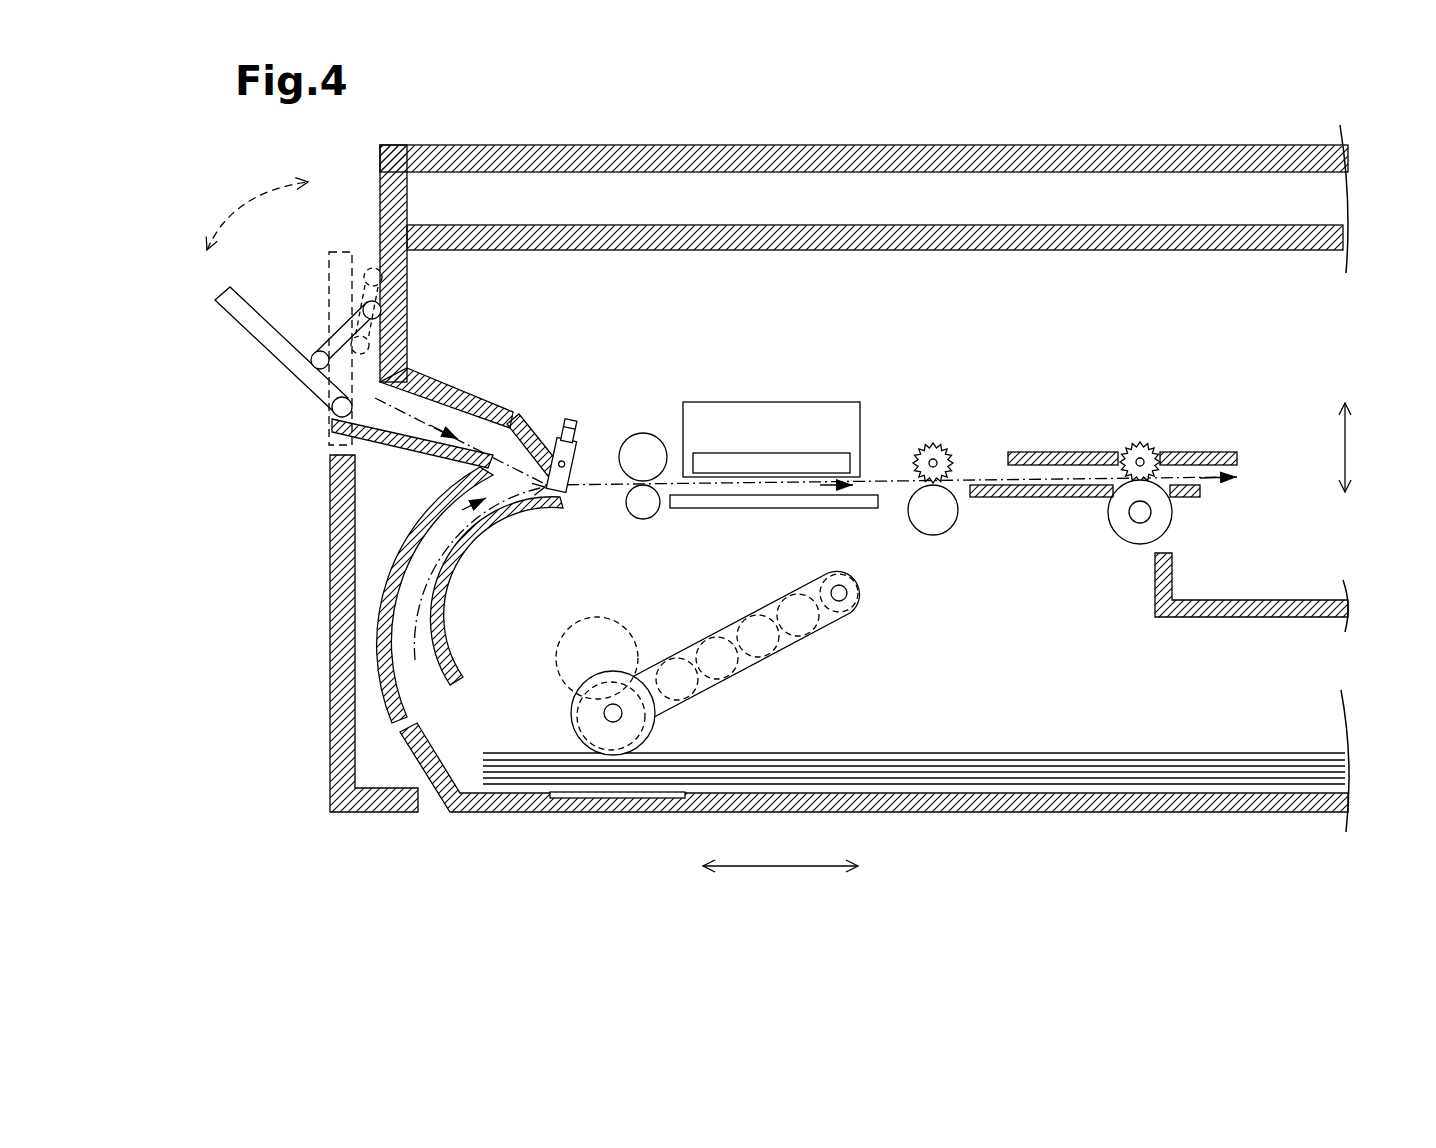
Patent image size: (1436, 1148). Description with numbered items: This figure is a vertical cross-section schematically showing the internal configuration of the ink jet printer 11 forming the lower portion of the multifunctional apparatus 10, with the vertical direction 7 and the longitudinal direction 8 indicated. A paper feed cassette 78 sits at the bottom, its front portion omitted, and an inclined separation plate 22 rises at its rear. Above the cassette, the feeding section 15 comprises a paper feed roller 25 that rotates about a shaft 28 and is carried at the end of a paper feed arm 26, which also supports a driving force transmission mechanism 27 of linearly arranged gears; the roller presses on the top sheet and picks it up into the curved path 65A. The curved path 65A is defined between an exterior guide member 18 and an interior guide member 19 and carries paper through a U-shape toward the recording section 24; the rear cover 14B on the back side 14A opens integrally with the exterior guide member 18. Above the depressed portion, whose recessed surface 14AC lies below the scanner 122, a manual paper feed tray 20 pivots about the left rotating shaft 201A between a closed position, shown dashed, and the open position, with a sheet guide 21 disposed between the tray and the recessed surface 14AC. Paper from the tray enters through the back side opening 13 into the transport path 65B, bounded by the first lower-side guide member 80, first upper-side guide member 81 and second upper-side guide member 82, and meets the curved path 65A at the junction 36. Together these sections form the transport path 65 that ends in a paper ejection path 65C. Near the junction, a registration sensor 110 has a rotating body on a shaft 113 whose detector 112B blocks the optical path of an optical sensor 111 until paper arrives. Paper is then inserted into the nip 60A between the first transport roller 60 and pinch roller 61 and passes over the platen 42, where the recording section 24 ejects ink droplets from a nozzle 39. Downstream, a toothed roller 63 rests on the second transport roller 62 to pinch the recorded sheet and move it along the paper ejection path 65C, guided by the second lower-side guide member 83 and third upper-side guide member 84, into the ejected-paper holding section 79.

The multifunctional apparatus 10 is at (262, 152).
The recessed surface 14AC is at (832, 344).
The scanner 122 is at (1163, 145).
The ink jet printer 11 is at (490, 302).
The first upper-side guide member 81 is at (437, 377).
The second upper-side guide member 82 is at (528, 470).
The back side 14A is at (341, 633).
The rear cover 14B is at (330, 705).
The first lower-side guide member 80 is at (390, 448).
The manual paper feed tray 20 is at (230, 318).
The sheet guide 21 is at (365, 270).
The left rotating shaft 201A is at (328, 408).
The back side opening 13 is at (372, 398).
The exterior guide member 18 is at (392, 562).
The interior guide member 19 is at (455, 583).
The junction 36 is at (548, 512).
The transport path 65 is at (806, 483).
The curved path 65A is at (417, 648).
The transport path 65B is at (415, 420).
The paper ejection path 65C is at (983, 478).
The registration sensor 110 is at (572, 446).
The optical sensor 111 is at (577, 415).
The detector 112B is at (591, 391).
The shaft 113 is at (565, 445).
The first transport roller 60 is at (623, 477).
The nip 60A is at (630, 487).
The pinch roller 61 is at (660, 512).
The recording section 24 is at (750, 408).
The nozzle 39 is at (768, 452).
The platen 42 is at (808, 508).
The toothed roller 63 is at (933, 443).
The second transport roller 62 is at (920, 528).
The third upper-side guide member 84 is at (1018, 452).
The second lower-side guide member 83 is at (988, 497).
The ejected-paper holding section 79 is at (1283, 600).
The vertical direction 7 is at (1343, 430).
The longitudinal direction 8 is at (775, 866).
The paper feed cassette 78 is at (874, 779).
The inclined separation plate 22 is at (430, 757).
The feeding section 15 is at (650, 612).
The paper feed arm 26 is at (748, 642).
The driving force transmission mechanism 27 is at (770, 665).
The shaft 28 is at (850, 605).
The paper feed roller 25 is at (590, 625).